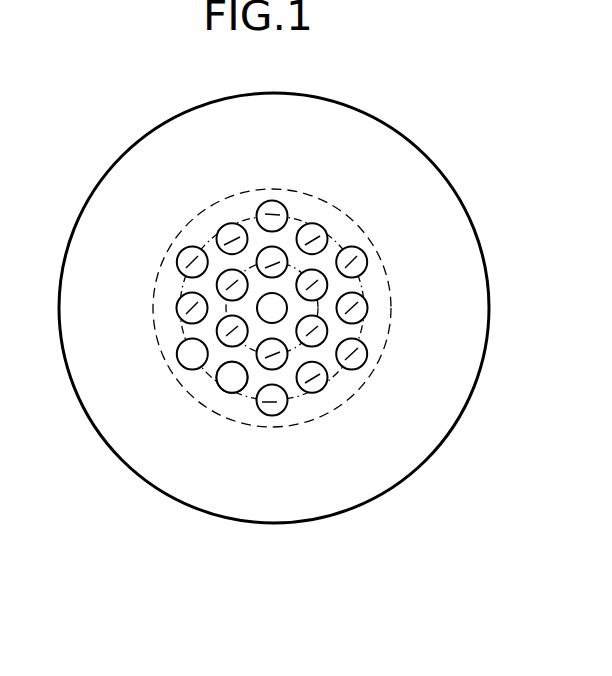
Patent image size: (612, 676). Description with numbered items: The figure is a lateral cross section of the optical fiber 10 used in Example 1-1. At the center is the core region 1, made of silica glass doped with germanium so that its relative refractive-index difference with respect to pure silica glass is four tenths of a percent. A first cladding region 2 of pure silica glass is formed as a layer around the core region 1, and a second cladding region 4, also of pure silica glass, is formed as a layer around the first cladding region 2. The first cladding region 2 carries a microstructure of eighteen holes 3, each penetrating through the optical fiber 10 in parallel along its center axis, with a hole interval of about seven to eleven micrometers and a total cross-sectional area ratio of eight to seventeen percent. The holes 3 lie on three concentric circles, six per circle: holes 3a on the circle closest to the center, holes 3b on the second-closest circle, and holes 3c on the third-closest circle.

The optical fiber 10 is at (343, 104).
The core region 1 is at (272, 308).
The first cladding region 2 is at (392, 306).
The holes 3 is at (182, 296).
The holes 3a is at (198, 350).
The holes 3b is at (233, 376).
The holes 3c is at (270, 402).
The second cladding region 4 is at (450, 410).